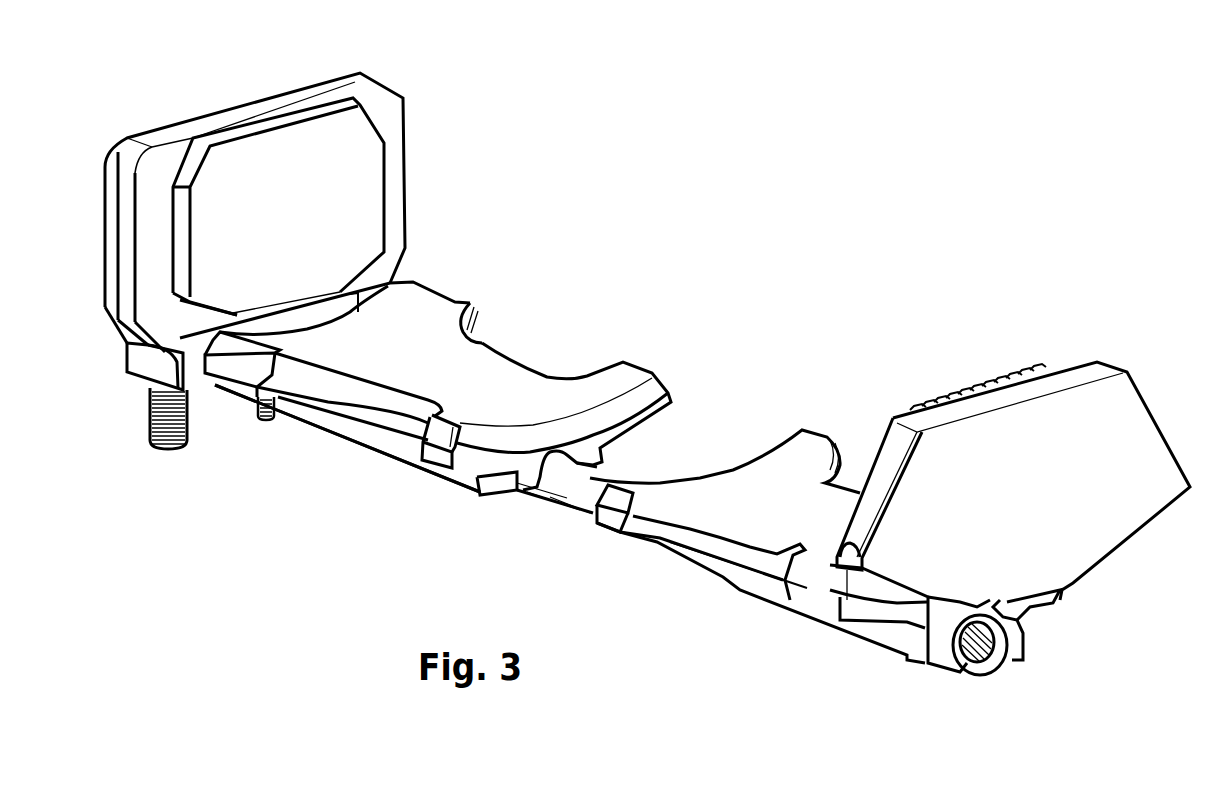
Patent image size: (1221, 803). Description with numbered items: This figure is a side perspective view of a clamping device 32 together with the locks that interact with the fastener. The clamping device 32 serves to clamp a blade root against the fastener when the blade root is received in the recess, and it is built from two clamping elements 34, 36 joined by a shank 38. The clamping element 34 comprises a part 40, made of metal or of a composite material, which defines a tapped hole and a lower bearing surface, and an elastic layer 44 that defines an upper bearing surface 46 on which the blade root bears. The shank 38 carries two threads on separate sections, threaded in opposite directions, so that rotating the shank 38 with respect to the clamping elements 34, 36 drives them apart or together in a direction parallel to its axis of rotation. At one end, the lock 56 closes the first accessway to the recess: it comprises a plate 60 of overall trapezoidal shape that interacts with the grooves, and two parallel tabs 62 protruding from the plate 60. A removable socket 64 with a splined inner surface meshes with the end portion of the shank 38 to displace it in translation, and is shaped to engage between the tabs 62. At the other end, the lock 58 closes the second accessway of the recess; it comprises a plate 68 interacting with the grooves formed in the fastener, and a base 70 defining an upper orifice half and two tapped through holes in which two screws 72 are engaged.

The clamping device 32 is at (741, 638).
The clamping element 34 is at (826, 418).
The clamping element 36 is at (567, 303).
The shank 38 is at (570, 513).
The part defining a tapped hole 40 is at (880, 643).
The elastic layer 44 is at (768, 450).
The upper bearing surface 46 is at (732, 487).
The lock 56 is at (990, 437).
The lock 58 is at (213, 123).
The plate 60 is at (1127, 412).
The tabs 62 is at (940, 663).
The removable socket 64 is at (997, 673).
The plate 68 is at (295, 148).
The base 70 is at (130, 353).
The screws 72 is at (150, 423).